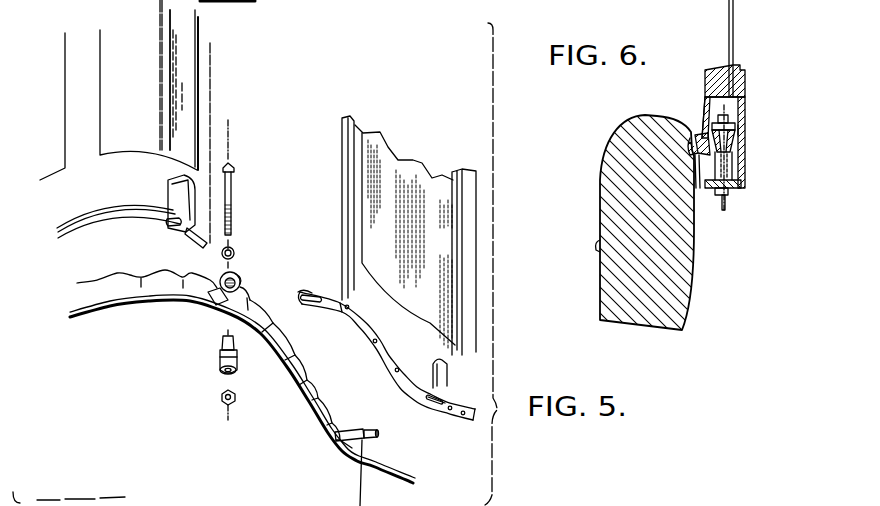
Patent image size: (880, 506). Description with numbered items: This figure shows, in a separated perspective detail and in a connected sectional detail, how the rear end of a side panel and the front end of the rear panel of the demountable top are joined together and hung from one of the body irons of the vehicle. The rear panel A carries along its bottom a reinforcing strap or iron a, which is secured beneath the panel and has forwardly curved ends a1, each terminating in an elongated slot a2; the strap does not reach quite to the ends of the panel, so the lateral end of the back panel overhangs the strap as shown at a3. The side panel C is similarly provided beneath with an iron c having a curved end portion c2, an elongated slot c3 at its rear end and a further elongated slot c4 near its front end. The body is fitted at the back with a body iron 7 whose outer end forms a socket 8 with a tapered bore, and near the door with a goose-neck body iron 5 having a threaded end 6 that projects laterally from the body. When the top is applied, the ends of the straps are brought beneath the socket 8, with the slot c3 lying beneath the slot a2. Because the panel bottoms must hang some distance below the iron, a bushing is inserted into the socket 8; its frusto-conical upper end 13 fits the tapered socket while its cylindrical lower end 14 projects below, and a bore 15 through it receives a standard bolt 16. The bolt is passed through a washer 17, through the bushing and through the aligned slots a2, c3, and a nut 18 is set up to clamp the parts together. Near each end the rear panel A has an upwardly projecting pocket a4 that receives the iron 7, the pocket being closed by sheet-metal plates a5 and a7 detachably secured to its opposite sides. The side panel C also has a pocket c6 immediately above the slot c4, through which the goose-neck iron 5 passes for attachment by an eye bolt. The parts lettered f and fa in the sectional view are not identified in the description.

In FIG. 5, the rear panel A is at (124, 121).
In FIG. 5, the iron a is at (111, 220).
In FIG. 6, the iron a is at (746, 182).
In FIG. 6, the forwardly curved end a1 is at (733, 109).
In FIG. 5, the elongated slot a2 is at (175, 227).
In FIG. 5, the overhanging end of back panel a3 is at (197, 245).
In FIG. 5, the pocket a4 is at (172, 188).
In FIG. 6, the plate a5 is at (744, 127).
In FIG. 6, the plate a7 is at (705, 112).
In FIG. 5, the body iron 5 is at (348, 433).
In FIG. 5, the threaded end 6 is at (368, 432).
In FIG. 5, the body iron 7 is at (212, 299).
In FIG. 6, the body iron 7 is at (690, 130).
In FIG. 5, the socket 8 is at (241, 281).
In FIG. 5, the frusto-conical upper end 13 is at (221, 349).
In FIG. 5, the cylindrical lower end 14 is at (220, 369).
In FIG. 5, the bore 15 is at (236, 372).
In FIG. 5, the bolt 16 is at (235, 212).
In FIG. 6, the bolt 16 is at (723, 210).
In FIG. 5, the washer 17 is at (236, 253).
In FIG. 5, the nut 18 is at (220, 400).
In FIG. 6, the nut 18 is at (718, 192).
In FIG. 5, the side panel C is at (398, 158).
In FIG. 5, the iron c is at (376, 348).
In FIG. 5, the curved end portion c2 is at (342, 308).
In FIG. 6, the curved end portion c2 is at (738, 188).
In FIG. 5, the elongated slot c3 is at (305, 290).
In FIG. 5, the elongated slot c4 is at (433, 398).
In FIG. 5, the pocket c6 is at (433, 363).
In FIG. 6, the conical spring cup f is at (741, 138).
In FIG. 6, the cup flange fa is at (736, 147).